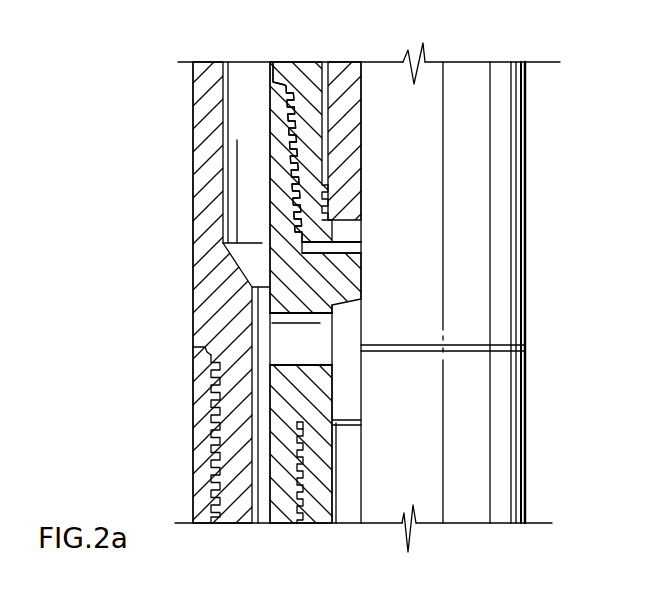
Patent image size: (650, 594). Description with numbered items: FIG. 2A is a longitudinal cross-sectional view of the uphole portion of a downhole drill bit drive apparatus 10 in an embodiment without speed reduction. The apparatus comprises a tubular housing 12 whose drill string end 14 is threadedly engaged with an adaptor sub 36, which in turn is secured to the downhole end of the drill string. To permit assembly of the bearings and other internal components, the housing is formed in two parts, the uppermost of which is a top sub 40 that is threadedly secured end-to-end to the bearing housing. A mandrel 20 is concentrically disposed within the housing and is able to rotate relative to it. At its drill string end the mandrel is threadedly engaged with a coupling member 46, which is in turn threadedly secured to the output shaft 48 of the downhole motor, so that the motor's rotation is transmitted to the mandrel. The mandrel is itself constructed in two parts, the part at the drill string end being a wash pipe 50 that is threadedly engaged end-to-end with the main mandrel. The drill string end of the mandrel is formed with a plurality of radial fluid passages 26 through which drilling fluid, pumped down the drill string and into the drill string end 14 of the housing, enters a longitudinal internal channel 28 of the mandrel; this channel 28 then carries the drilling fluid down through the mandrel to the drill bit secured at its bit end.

The downhole drill bit drive apparatus 10 is at (116, 341).
The tubular housing 12 is at (193, 436).
The drill string end of the housing 14 is at (193, 380).
The mandrel 20 is at (268, 498).
The radial fluid passages 26 is at (348, 370).
The longitudinal internal channel 28 is at (337, 472).
The adaptor sub 36 is at (193, 158).
The top sub 40 is at (193, 516).
The coupling member 46 is at (313, 271).
The output shaft 48 is at (343, 200).
The wash pipe 50 is at (313, 512).